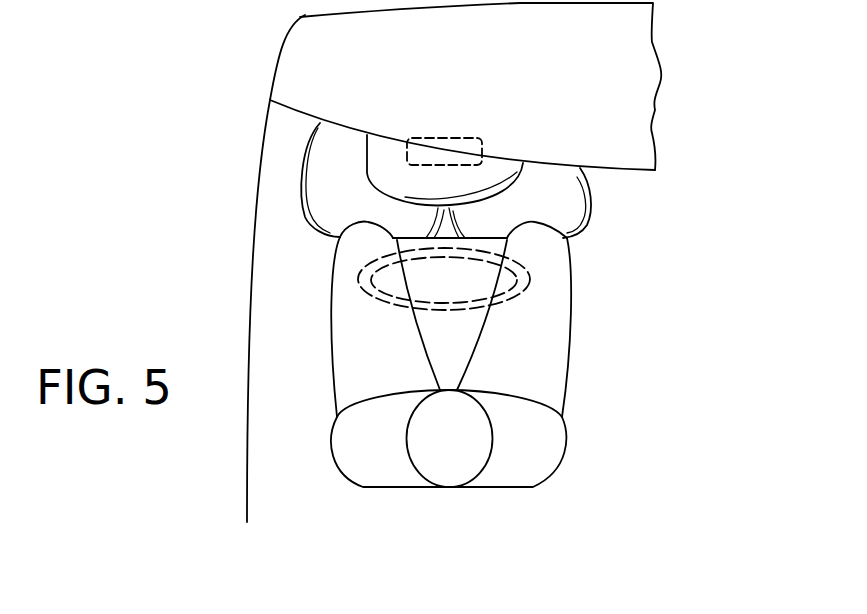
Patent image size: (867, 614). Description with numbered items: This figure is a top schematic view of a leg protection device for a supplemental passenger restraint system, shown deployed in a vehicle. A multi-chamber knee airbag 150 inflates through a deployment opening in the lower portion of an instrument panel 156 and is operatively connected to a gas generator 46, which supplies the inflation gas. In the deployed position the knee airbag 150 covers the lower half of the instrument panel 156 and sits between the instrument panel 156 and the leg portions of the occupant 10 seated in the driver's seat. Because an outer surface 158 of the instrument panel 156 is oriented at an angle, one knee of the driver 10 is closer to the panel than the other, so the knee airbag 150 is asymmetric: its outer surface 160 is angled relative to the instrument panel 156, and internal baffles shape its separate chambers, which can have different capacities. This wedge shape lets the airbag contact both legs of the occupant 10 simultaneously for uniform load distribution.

The occupant 10 is at (552, 378).
The gas generator 46 is at (463, 138).
The multi-chamber knee airbag 150 is at (613, 223).
The instrument panel 156 is at (638, 68).
The outer surface of the instrument panel 158 is at (545, 163).
The outer surface of the knee airbag 160 is at (313, 227).